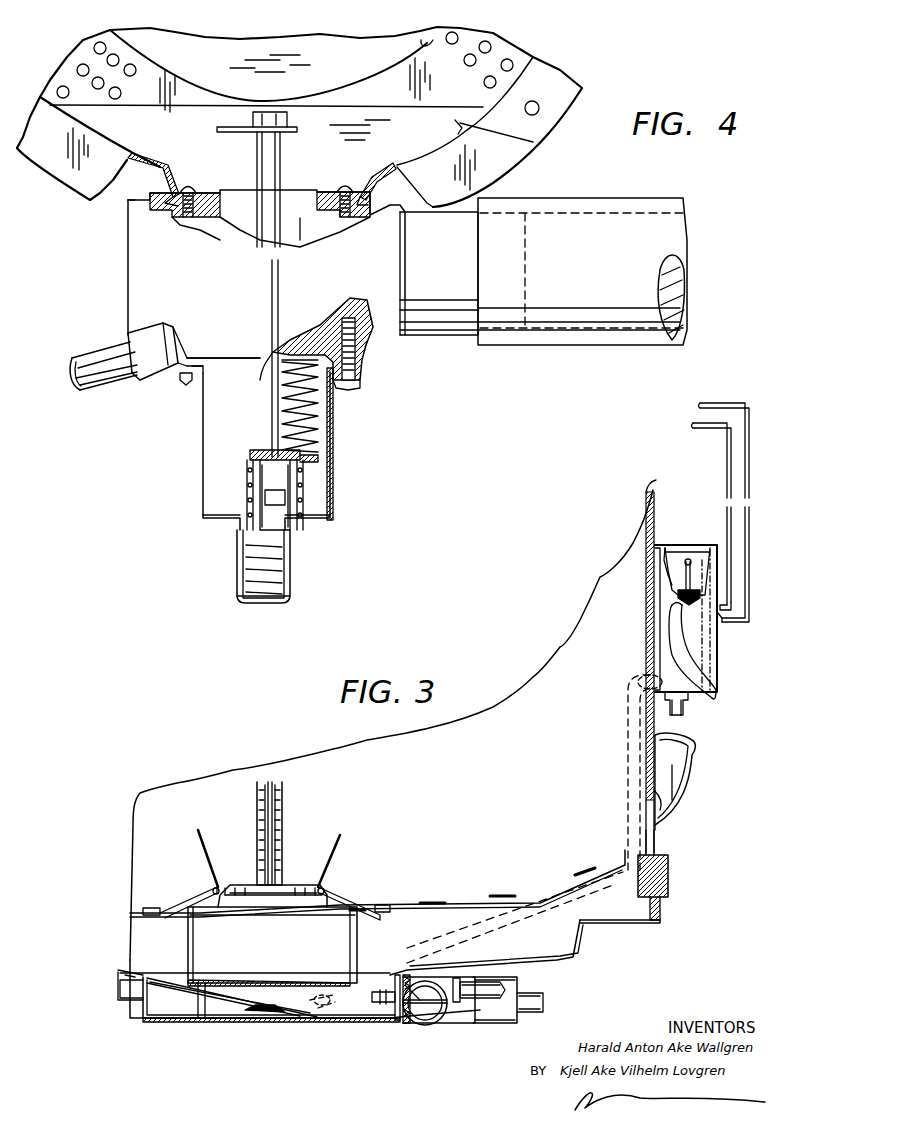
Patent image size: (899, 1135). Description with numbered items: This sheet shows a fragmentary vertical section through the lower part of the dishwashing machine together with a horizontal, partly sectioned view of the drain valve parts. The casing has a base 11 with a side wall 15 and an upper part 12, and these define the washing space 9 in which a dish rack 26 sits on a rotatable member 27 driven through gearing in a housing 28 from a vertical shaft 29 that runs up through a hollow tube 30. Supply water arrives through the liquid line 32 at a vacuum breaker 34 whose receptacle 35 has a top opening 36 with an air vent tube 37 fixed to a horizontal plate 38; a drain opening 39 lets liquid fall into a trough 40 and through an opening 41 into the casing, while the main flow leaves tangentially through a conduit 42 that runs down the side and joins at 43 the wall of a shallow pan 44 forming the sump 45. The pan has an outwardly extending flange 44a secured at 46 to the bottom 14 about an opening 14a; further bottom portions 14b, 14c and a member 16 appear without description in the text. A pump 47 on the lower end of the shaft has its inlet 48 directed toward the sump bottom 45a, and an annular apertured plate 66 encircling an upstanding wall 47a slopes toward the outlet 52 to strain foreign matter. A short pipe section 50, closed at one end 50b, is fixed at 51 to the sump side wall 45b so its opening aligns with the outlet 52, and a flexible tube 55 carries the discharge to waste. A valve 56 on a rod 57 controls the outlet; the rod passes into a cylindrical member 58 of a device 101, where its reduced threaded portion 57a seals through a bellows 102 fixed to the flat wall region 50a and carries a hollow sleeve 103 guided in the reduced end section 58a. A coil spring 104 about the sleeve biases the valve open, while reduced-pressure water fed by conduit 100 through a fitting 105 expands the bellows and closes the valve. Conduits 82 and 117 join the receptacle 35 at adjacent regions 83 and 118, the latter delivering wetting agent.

In FIG. 3, the space 9 is at (391, 725).
In FIG. 3, the base 11 is at (668, 925).
In FIG. 3, the upper part 12 is at (660, 495).
In FIG. 3, the bottom 14 is at (555, 968).
In FIG. 3, the opening 14a is at (175, 973).
In FIG. 3, the tray step 14b is at (556, 936).
In FIG. 3, the tray end wall 14c is at (636, 920).
In FIG. 3, the side wall 15 is at (662, 905).
In FIG. 3, the seal block 16 is at (670, 880).
In FIG. 3, the dish rack 26 is at (338, 862).
In FIG. 3, the rotatable member 27 is at (225, 905).
In FIG. 3, the housing 28 is at (197, 895).
In FIG. 3, the vertical shaft 29 is at (268, 823).
In FIG. 3, the hollow tube 30 is at (284, 800).
In FIG. 3, the liquid line 32 is at (718, 680).
In FIG. 3, the vacuum breaker 34 is at (706, 540).
In FIG. 3, the receptacle 35 is at (655, 545).
In FIG. 3, the top opening 36 is at (680, 548).
In FIG. 3, the air vent tube 37 is at (690, 580).
In FIG. 3, the horizontal plate 38 is at (678, 592).
In FIG. 3, the drain opening 39 is at (686, 708).
In FIG. 3, the trough 40 is at (690, 795).
In FIG. 3, the opening 41 is at (666, 786).
In FIG. 3, the conduit 42 is at (632, 733).
In FIG. 3, the connection 43 is at (322, 1010).
In FIG. 4, the pan 44 is at (533, 143).
In FIG. 3, the pan 44 is at (143, 1018).
In FIG. 4, the flange 44a is at (40, 107).
In FIG. 3, the flange 44a is at (118, 990).
In FIG. 4, the sump 45 is at (440, 133).
In FIG. 3, the sump 45 is at (215, 1024).
In FIG. 3, the bottom 45a is at (262, 1022).
In FIG. 3, the side wall 45b is at (138, 1018).
In FIG. 3, the securing point 46 is at (138, 975).
In FIG. 3, the pump 47 is at (248, 1014).
In FIG. 4, the upstanding wall 47a is at (428, 40).
In FIG. 3, the upstanding wall 47a is at (262, 1000).
In FIG. 3, the inlet 48 is at (280, 1022).
In FIG. 4, the pipe section 50 is at (172, 275).
In FIG. 3, the pipe section 50 is at (438, 1025).
In FIG. 4, the outer flat wall region 50a is at (285, 345).
In FIG. 4, the closed end 50b is at (128, 218).
In FIG. 4, the fixing point 51 is at (196, 188).
In FIG. 4, the outlet 52 is at (315, 205).
In FIG. 3, the outlet 52 is at (398, 1025).
In FIG. 4, the hollow flexible tube 55 is at (582, 345).
In FIG. 3, the hollow flexible tube 55 is at (428, 980).
In FIG. 4, the valve 56 is at (215, 130).
In FIG. 3, the valve 56 is at (393, 990).
In FIG. 4, the rod 57 is at (281, 170).
In FIG. 3, the rod 57 is at (390, 1005).
In FIG. 4, the reduced threaded portion 57a is at (280, 465).
In FIG. 4, the cylindrical member 58 is at (333, 490).
In FIG. 3, the cylindrical member 58 is at (500, 1025).
In FIG. 4, the reduced end section 58a is at (292, 570).
In FIG. 3, the reduced end section 58a is at (538, 1012).
In FIG. 4, the apertured plate 66 is at (170, 30).
In FIG. 3, the apertured plate 66 is at (230, 999).
In FIG. 3, the conduit 82 is at (750, 465).
In FIG. 3, the connection region 83 is at (718, 622).
In FIG. 4, the conduit 100 is at (118, 385).
In FIG. 3, the conduit 100 is at (498, 985).
In FIG. 4, the device 101 is at (387, 403).
In FIG. 3, the device 101 is at (462, 1050).
In FIG. 4, the bellows 102 is at (318, 435).
In FIG. 4, the hollow sleeve 103 is at (250, 470).
In FIG. 4, the coil spring 104 is at (256, 580).
In FIG. 4, the fitting 105 is at (155, 378).
In FIG. 3, the fitting 105 is at (465, 985).
In FIG. 3, the conduit 117 is at (745, 462).
In FIG. 3, the connection 118 is at (718, 600).